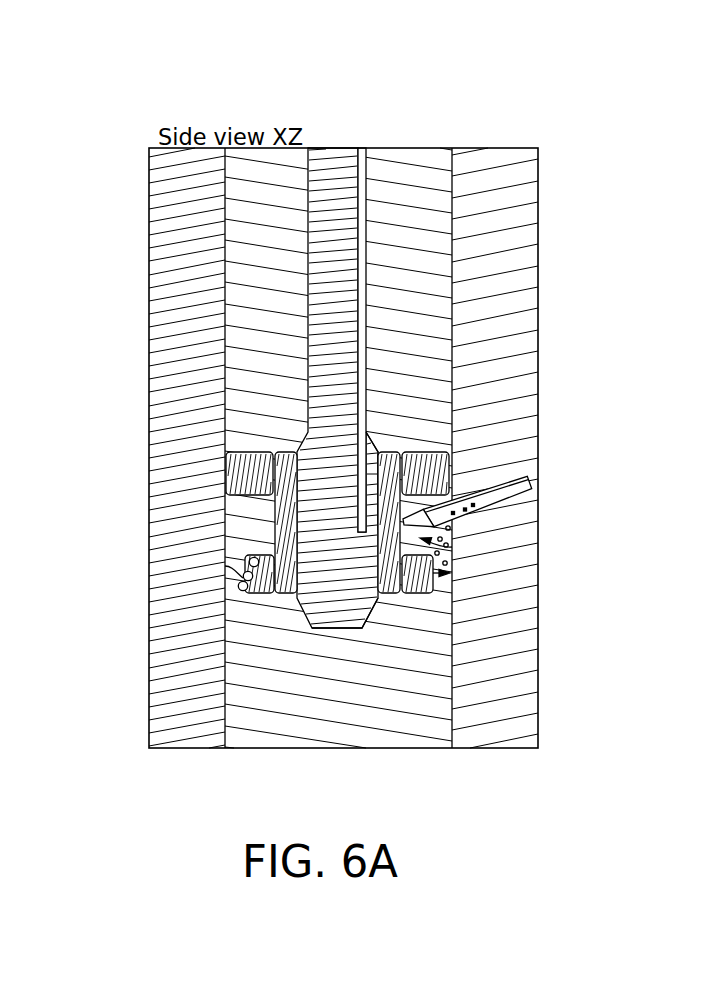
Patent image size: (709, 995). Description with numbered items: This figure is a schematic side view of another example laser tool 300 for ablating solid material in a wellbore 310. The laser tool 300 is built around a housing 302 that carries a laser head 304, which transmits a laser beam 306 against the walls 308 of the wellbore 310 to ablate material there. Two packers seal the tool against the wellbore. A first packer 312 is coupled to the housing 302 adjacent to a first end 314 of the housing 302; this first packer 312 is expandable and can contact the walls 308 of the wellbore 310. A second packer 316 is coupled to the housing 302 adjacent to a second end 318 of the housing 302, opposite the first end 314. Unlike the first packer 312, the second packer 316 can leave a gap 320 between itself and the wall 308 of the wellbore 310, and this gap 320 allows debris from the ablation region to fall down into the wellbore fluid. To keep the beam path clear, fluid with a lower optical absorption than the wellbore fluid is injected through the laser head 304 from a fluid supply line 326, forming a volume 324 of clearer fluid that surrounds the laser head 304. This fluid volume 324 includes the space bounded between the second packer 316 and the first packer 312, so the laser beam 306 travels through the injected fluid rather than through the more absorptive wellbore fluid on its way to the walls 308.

The wellbore 310 is at (228, 100).
The laser tool 300 is at (297, 427).
The housing 302 is at (300, 604).
The fluid supply line 326 is at (367, 330).
The first end 314 is at (368, 435).
The walls 308 is at (453, 418).
The first packer 312 is at (460, 457).
The laser beam 306 is at (535, 494).
The laser head 304 is at (445, 523).
The volume 324 is at (452, 547).
The gap 320 is at (452, 575).
The second packer 316 is at (420, 594).
The second end 318 is at (375, 618).